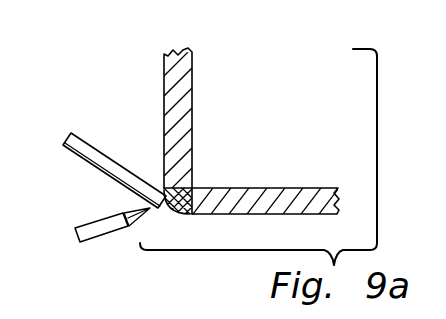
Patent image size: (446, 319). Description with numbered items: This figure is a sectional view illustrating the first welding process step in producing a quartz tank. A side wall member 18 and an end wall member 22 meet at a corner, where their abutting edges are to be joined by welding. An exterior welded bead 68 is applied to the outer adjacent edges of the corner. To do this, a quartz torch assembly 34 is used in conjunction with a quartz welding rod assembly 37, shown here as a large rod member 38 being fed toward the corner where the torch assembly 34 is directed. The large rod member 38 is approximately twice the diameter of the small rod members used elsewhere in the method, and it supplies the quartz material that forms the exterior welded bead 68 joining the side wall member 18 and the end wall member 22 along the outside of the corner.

The side wall member 18 is at (288, 188).
The end wall member 22 is at (183, 95).
The quartz torch assembly 34 is at (105, 240).
The quartz welding rod assembly 37 is at (127, 97).
The large rod member 38 is at (88, 147).
The exterior welded bead 68 is at (176, 212).